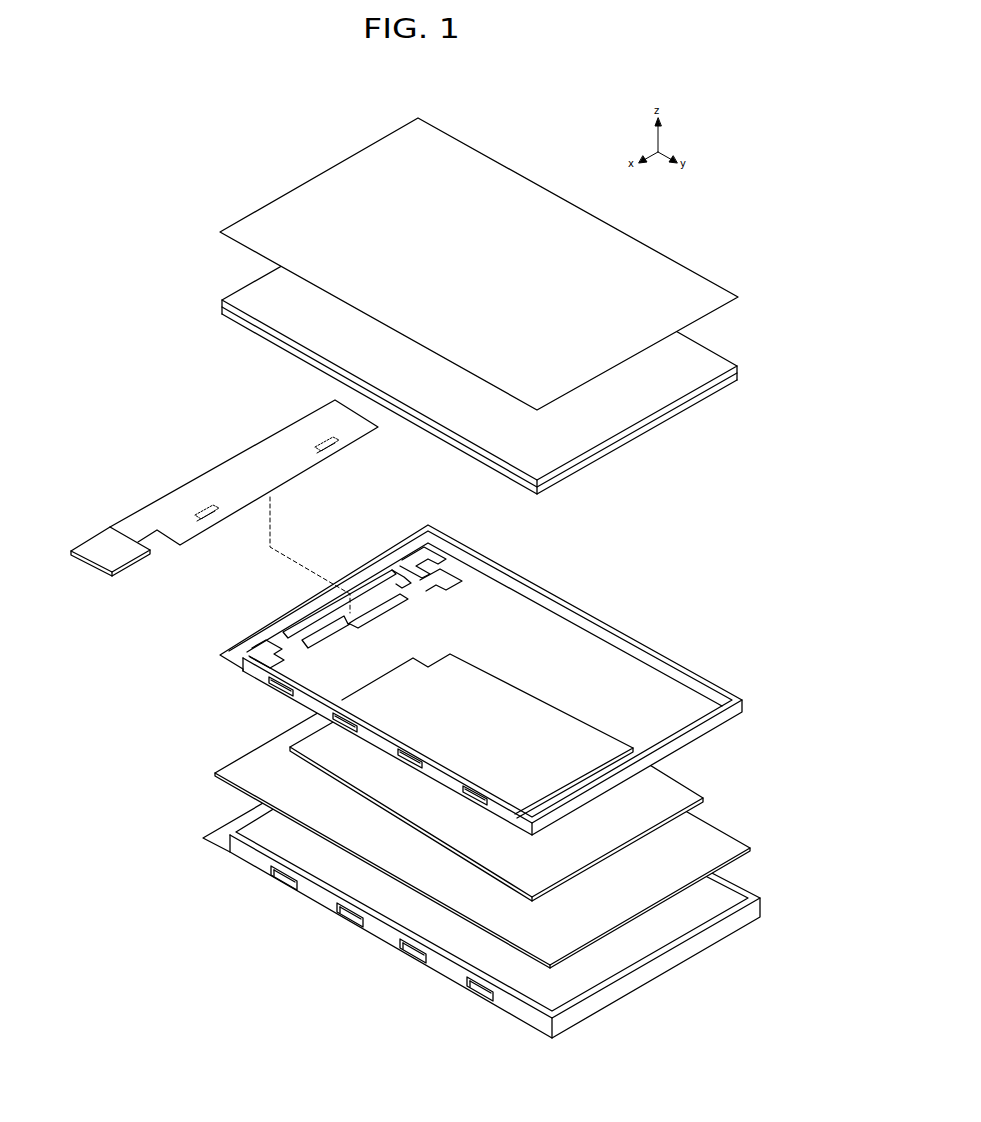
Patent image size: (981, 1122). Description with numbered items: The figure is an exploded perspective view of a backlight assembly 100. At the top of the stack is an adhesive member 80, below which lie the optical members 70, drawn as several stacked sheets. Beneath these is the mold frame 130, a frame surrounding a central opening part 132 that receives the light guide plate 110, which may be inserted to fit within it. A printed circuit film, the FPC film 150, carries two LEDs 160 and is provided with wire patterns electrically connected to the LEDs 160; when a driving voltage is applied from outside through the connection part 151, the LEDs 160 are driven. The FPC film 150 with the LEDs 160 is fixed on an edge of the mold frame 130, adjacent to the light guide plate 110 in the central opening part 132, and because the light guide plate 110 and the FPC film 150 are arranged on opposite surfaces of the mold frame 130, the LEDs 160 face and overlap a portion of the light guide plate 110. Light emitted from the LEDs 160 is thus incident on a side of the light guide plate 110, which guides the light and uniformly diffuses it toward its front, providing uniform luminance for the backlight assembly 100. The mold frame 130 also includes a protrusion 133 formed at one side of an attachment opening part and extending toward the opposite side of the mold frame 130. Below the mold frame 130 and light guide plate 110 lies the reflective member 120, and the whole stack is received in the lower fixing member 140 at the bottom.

The backlight assembly 100 is at (333, 103).
The adhesive member 80 is at (240, 214).
The optical members 70 is at (214, 297).
The FPC film 150 is at (219, 488).
The connection part 151 is at (100, 543).
The LED 160 is at (207, 507).
The mold frame 130 is at (467, 680).
The central opening part 132 is at (632, 690).
The protrusion 133 is at (477, 584).
The light guide plate 110 is at (297, 742).
The reflective member 120 is at (237, 775).
The lower fixing member 140 is at (245, 855).